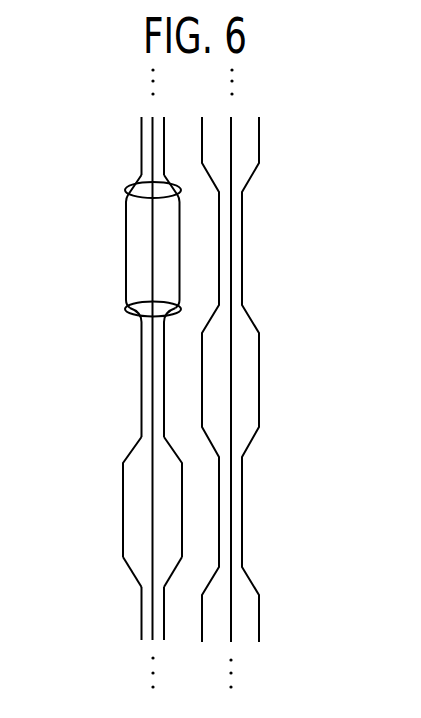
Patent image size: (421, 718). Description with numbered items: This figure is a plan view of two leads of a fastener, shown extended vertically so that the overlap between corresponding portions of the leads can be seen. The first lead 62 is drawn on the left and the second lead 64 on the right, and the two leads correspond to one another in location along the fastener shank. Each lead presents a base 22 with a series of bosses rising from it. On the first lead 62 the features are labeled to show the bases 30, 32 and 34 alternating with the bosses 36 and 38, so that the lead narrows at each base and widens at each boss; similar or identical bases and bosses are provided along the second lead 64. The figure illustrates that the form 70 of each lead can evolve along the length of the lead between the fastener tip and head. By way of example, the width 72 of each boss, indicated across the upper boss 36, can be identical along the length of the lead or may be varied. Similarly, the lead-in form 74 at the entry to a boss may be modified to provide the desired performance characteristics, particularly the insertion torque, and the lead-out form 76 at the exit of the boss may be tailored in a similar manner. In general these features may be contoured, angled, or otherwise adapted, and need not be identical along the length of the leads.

The base 22 is at (182, 380).
The base 30 is at (142, 143).
The base 32 is at (141, 353).
The base 34 is at (140, 612).
The boss 36 is at (140, 248).
The boss 38 is at (137, 527).
The first lead 62 is at (132, 573).
The second lead 64 is at (258, 605).
The form 70 is at (107, 208).
The width 72 is at (213, 288).
The lead-in form 74 is at (131, 185).
The lead-out form 76 is at (128, 309).